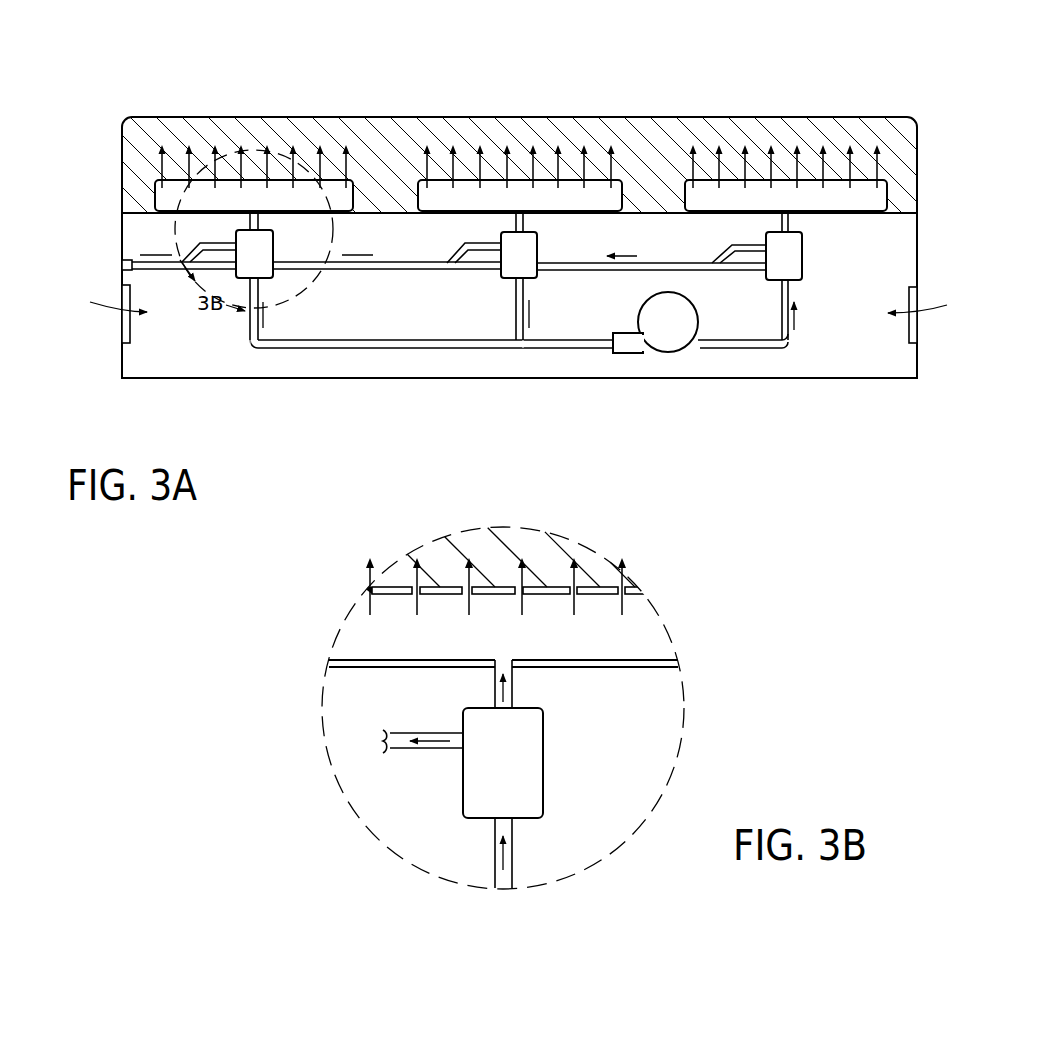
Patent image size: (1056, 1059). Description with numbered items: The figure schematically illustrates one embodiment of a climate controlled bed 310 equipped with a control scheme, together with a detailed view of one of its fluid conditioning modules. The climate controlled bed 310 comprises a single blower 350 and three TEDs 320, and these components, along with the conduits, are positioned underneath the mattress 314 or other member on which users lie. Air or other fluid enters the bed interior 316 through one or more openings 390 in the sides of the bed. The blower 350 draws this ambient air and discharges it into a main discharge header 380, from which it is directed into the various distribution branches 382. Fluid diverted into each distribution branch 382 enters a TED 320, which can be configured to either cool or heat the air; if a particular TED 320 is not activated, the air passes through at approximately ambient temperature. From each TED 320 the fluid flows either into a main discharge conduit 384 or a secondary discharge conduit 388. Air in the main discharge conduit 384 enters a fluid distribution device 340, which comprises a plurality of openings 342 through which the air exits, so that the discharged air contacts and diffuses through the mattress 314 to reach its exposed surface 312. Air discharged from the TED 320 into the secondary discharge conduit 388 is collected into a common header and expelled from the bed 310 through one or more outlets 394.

In FIG. 3A, the climate controlled bed 310 is at (945, 98).
In FIG. 3A, the exposed surface 312 is at (709, 117).
In FIG. 3A, the mattress 314 is at (885, 138).
In FIG. 3B, the mattress 314 is at (548, 542).
In FIG. 3A, the bed interior 316 is at (897, 260).
In FIG. 3A, the TED 320 is at (273, 255).
In FIG. 3B, the TED 320 is at (532, 803).
In FIG. 3A, the fluid distribution device 340 is at (302, 173).
In FIG. 3B, the fluid distribution device 340 is at (652, 628).
In FIG. 3B, the openings 342 is at (513, 580).
In FIG. 3A, the blower 350 is at (668, 347).
In FIG. 3A, the main discharge header 380 is at (420, 348).
In FIG. 3A, the distribution branch 382 is at (245, 318).
In FIG. 3B, the distribution branch 382 is at (507, 848).
In FIG. 3B, the main discharge conduit 384 is at (507, 692).
In FIG. 3A, the secondary discharge conduit 388 is at (148, 268).
In FIG. 3B, the secondary discharge conduit 388 is at (420, 732).
In FIG. 3A, the opening 390 is at (120, 325).
In FIG. 3A, the outlet 394 is at (123, 257).